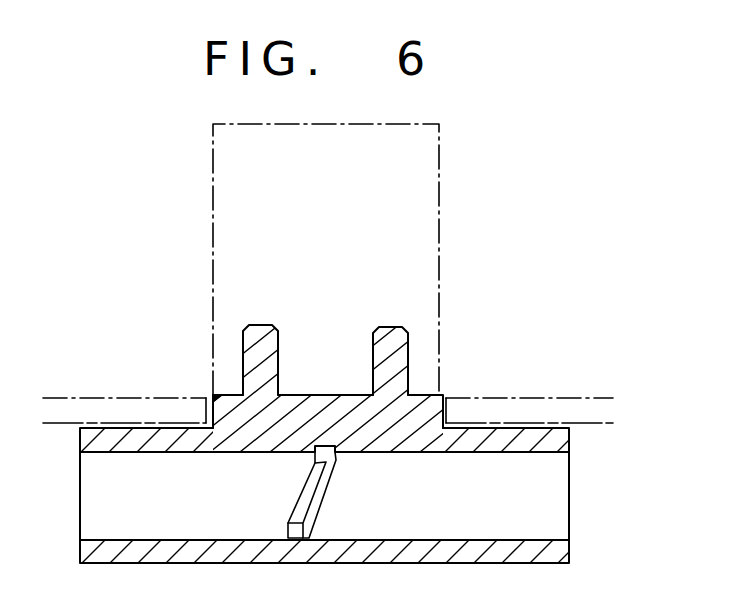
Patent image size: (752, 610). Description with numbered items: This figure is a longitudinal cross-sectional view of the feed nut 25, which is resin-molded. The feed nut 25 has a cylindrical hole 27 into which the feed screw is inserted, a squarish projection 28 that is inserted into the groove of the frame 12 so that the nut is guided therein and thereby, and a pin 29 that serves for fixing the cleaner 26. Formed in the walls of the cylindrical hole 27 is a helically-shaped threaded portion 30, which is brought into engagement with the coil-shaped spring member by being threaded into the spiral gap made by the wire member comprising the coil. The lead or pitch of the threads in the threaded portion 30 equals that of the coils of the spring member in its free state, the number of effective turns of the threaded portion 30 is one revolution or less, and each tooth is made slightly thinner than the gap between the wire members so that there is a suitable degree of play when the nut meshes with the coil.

The feed nut 25 is at (90, 334).
The cleaner 26 is at (440, 175).
The frame 12 is at (150, 398).
The cylindrical hole 27 is at (543, 442).
The squarish projection 28 is at (442, 400).
The pin 29 is at (406, 340).
The threaded portion 30 is at (327, 477).